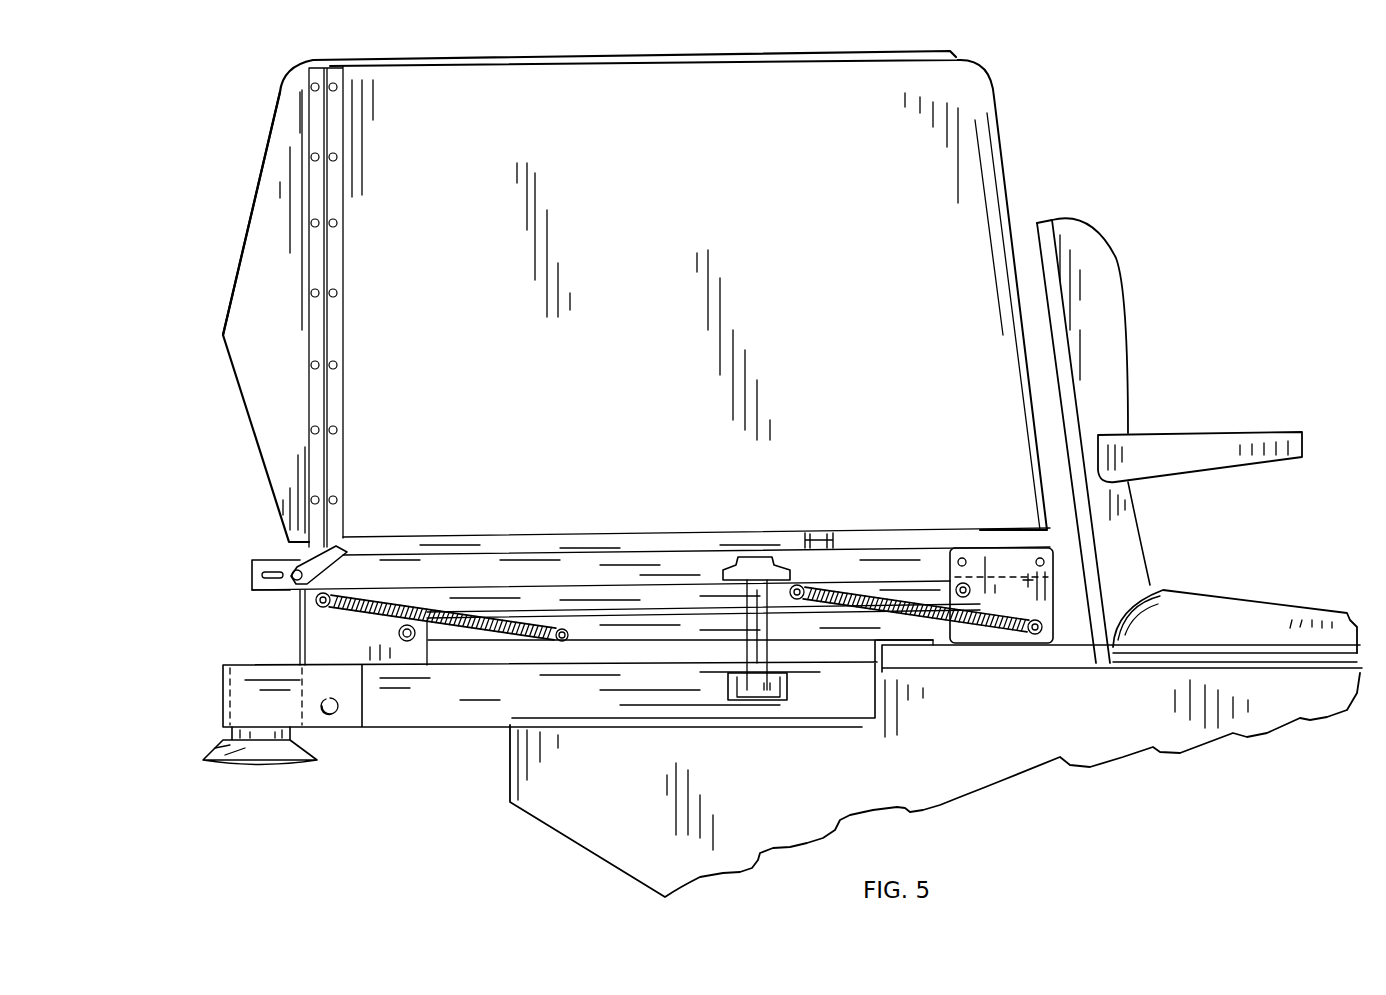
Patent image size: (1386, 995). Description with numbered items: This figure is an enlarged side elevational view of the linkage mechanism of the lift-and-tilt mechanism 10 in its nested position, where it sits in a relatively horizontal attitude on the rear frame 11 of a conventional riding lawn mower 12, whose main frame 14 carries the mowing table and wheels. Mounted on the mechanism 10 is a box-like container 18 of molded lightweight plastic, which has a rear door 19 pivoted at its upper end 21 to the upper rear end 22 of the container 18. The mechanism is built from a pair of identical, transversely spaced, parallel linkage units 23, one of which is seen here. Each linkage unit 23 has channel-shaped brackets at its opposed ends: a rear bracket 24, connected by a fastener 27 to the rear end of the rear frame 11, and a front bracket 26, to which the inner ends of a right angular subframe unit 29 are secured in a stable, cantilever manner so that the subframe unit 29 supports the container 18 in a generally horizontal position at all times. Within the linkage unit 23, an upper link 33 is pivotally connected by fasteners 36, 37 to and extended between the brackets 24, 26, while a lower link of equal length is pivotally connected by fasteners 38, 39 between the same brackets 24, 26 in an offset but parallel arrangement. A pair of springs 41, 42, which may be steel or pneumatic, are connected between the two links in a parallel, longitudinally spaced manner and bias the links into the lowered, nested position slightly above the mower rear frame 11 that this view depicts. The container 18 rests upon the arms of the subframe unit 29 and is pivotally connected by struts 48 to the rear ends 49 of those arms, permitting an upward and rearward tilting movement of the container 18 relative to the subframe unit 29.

The lift-and-tilt mechanism 10 is at (238, 628).
The rear frame 11 is at (461, 700).
The riding lawn mower 12 is at (1246, 362).
The main frame 14 is at (570, 807).
The box-like container 18 is at (980, 185).
The rear door 19 is at (250, 302).
The upper end of rear door 21 is at (290, 100).
The upper rear end of container 22 is at (340, 195).
The linkage unit 23 is at (674, 572).
The rear bracket 24 is at (335, 643).
The front bracket 26 is at (1005, 560).
The fastener 27 is at (338, 727).
The right angular subframe unit 29 is at (587, 540).
The upper link 33 is at (555, 593).
The fastener 36 is at (315, 602).
The fastener 37 is at (933, 570).
The fastener 38 is at (407, 650).
The fastener 39 is at (1034, 634).
The spring 41 is at (445, 606).
The spring 42 is at (887, 590).
The strut 48 is at (303, 557).
The rear end of arm 49 is at (250, 578).